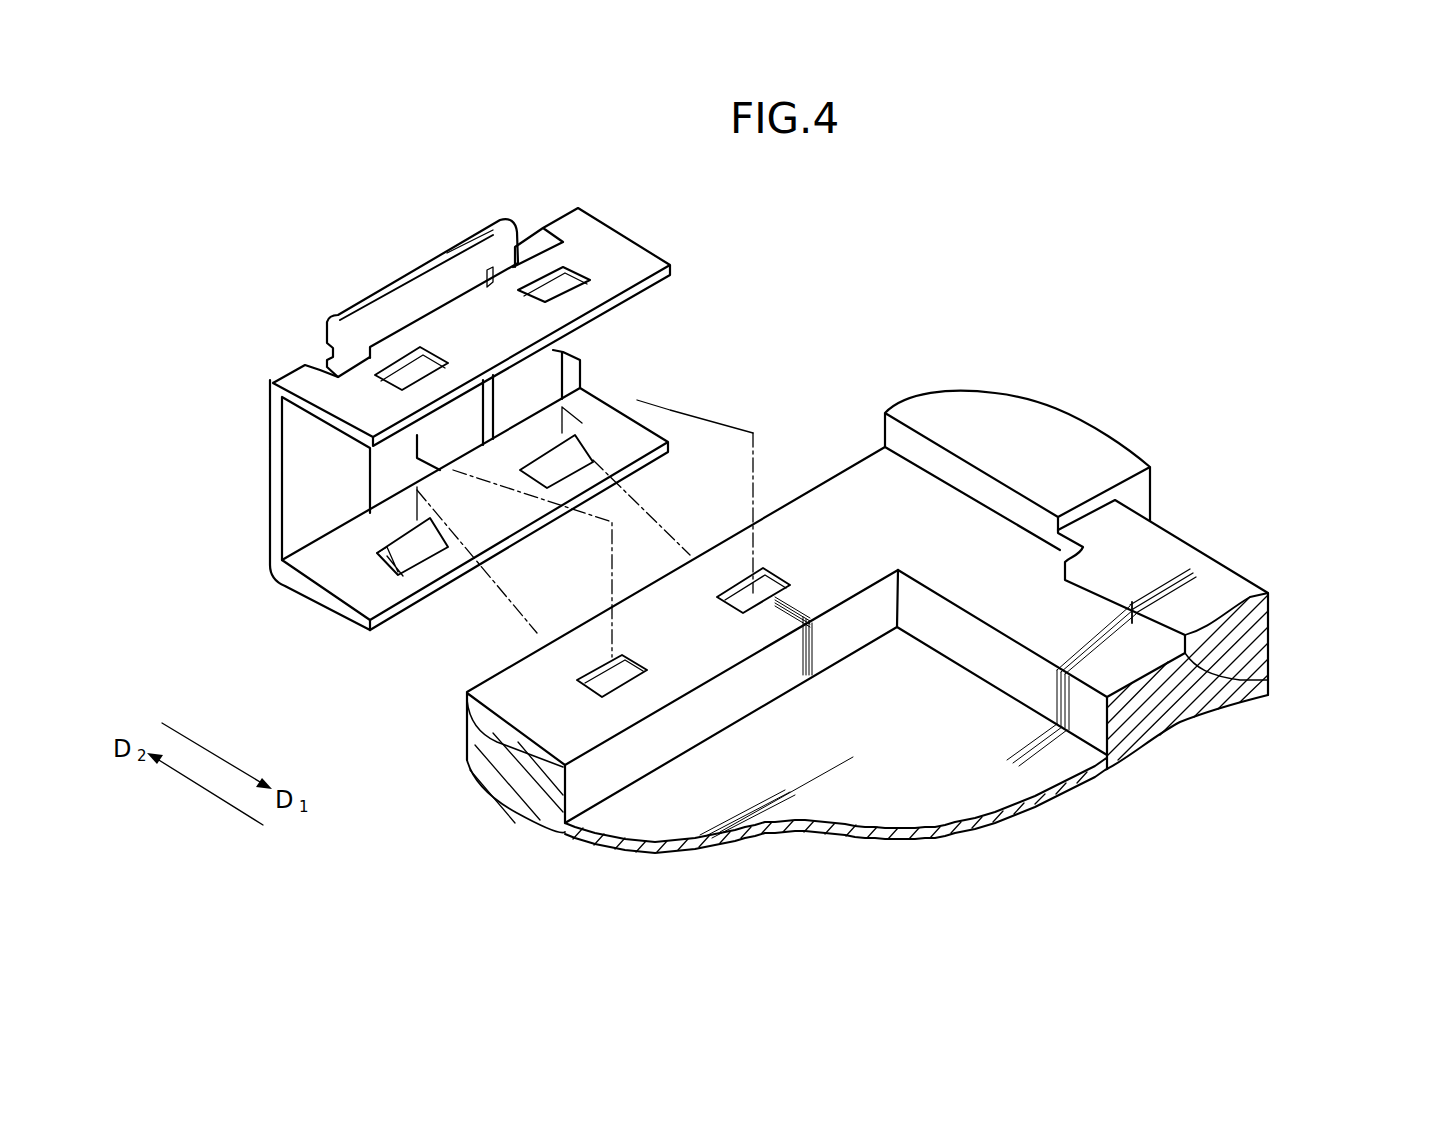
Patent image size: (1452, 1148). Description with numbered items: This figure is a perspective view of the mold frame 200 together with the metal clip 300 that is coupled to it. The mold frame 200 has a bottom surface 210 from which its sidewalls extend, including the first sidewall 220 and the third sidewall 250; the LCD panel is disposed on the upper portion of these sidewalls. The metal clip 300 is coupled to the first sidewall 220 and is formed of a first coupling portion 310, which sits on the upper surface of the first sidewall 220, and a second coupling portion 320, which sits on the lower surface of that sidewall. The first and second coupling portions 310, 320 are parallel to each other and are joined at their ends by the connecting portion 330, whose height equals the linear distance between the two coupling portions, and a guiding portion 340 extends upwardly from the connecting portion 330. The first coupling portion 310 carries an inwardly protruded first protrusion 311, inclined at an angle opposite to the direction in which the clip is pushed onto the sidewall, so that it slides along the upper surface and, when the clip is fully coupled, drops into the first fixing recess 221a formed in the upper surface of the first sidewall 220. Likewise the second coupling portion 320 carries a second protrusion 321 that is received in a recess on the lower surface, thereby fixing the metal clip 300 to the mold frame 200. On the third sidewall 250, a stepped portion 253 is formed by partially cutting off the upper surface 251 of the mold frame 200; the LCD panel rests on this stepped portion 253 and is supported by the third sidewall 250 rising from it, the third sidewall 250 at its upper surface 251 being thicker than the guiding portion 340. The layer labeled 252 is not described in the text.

The mold frame 200 is at (947, 792).
The bottom surface 210 is at (857, 790).
The first sidewall 220 is at (525, 737).
The first fixing recess 221a is at (767, 590).
The third sidewall 250 is at (1381, 608).
The upper surface 251 is at (1233, 583).
The lower layer of FPC 252 is at (1268, 695).
The stepped portion 253 is at (1268, 640).
The metal clip 300 is at (295, 352).
The first coupling portion 310 is at (618, 245).
The first protrusion 311 is at (555, 290).
The second coupling portion 320 is at (650, 410).
The second protrusion 321 is at (630, 440).
The connecting portion 330 is at (315, 473).
The guiding portion 340 is at (450, 243).